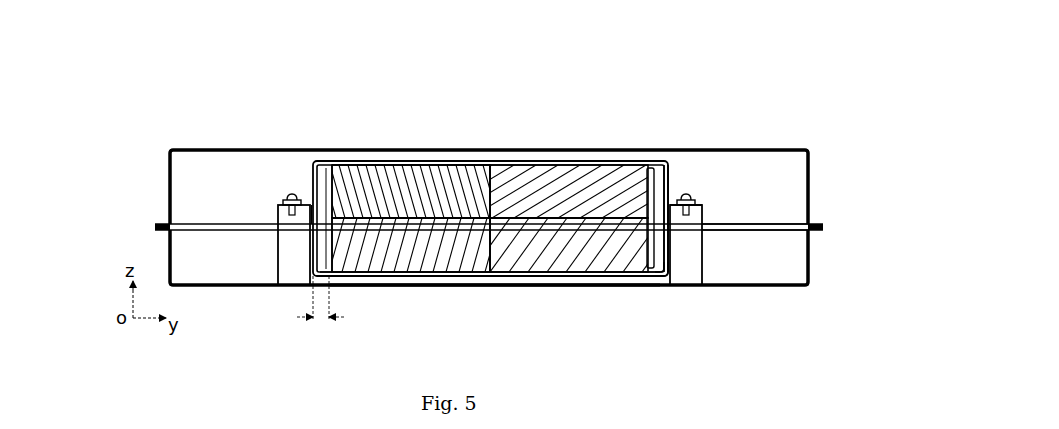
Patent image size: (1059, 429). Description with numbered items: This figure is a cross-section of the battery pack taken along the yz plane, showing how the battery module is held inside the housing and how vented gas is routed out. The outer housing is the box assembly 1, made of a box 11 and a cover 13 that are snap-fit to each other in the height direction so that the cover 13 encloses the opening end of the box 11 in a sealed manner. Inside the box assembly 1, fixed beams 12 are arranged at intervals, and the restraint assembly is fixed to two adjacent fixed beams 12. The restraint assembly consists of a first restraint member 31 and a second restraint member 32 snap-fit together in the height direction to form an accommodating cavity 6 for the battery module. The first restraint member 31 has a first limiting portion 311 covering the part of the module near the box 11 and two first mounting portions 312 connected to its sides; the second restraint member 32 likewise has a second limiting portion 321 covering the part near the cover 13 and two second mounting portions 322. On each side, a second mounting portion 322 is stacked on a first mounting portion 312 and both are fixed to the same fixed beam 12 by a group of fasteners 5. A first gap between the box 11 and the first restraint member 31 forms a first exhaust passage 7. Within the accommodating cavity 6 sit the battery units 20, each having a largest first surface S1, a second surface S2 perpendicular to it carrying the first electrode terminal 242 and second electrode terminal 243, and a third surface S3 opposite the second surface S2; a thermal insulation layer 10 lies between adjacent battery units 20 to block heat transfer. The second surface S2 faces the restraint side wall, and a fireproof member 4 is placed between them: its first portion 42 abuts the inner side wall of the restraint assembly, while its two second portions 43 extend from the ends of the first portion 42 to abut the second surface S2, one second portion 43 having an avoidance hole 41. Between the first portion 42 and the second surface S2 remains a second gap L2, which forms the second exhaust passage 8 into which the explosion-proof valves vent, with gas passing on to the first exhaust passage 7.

The box assembly 1 is at (90, 168).
The box 11 is at (178, 263).
The fixed beam 12 is at (278, 213).
The cover 13 is at (178, 189).
The fastener 5 is at (289, 195).
The second exhaust passage 8 is at (310, 283).
The second surface S2 is at (297, 193).
The second restraint member 32 is at (388, 157).
The first restraint member 31 is at (392, 277).
The first limiting portion 311 is at (472, 270).
The first mounting portion 312 is at (707, 230).
The second limiting portion 321 is at (445, 168).
The second mounting portion 322 is at (695, 202).
The first electrode terminal 242 is at (327, 165).
The second electrode terminal 243 is at (393, 112).
The battery unit 20 is at (538, 185).
The thermal insulation layer 10 is at (497, 272).
The first surface S1 is at (493, 190).
The third surface S3 is at (489, 216).
The first exhaust passage 7 is at (548, 285).
The accommodating cavity 6 is at (660, 270).
The fireproof member 4 is at (663, 162).
The avoidance hole 41 is at (664, 272).
The first portion 42 is at (668, 185).
The second portion 43 is at (656, 158).
The second gap L2 is at (320, 298).